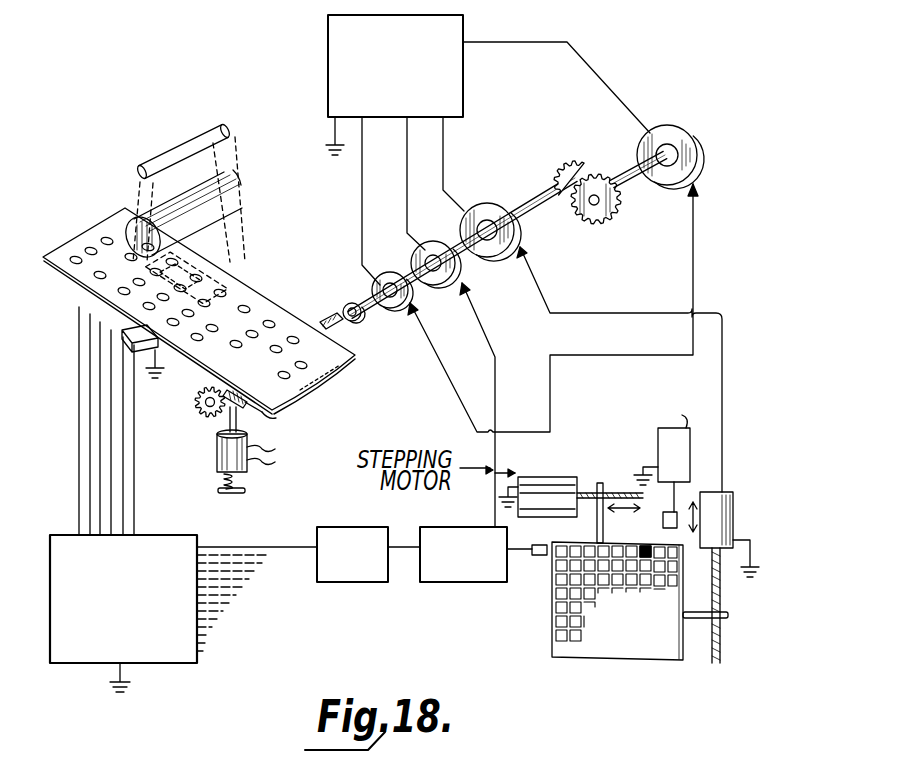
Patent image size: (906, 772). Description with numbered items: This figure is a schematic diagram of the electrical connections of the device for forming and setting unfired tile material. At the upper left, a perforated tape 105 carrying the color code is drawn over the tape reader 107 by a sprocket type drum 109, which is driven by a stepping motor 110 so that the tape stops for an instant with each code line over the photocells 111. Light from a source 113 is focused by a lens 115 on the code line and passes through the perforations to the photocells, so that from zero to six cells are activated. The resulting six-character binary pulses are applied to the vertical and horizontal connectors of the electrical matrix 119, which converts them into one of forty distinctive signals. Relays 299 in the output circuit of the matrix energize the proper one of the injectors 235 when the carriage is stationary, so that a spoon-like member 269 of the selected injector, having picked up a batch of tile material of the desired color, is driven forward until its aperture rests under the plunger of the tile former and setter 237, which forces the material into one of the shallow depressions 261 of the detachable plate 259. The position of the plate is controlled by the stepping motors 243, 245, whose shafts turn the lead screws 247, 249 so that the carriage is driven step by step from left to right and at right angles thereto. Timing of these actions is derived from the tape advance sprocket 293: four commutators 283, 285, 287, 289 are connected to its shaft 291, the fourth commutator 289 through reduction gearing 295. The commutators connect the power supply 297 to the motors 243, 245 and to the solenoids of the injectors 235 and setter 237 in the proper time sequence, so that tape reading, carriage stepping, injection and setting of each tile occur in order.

The tape 105 is at (80, 288).
The tape reader 107 is at (288, 286).
The sprocket type drum 109 is at (200, 412).
The stepping motor 110 is at (217, 462).
The photocells 111 is at (172, 356).
The light source 113 is at (172, 148).
The lens 115 is at (241, 187).
The electrical matrix 119 is at (167, 658).
The injectors 235 is at (464, 583).
The tile former and setter 237 is at (686, 437).
The stepping motor 243 is at (533, 483).
The stepping motor 245 is at (734, 524).
The lead screw 247 is at (622, 467).
The lead screw 249 is at (722, 638).
The detachable plate 259 is at (548, 632).
The shallow depressions 261 is at (655, 545).
The spoon-like members 269 is at (521, 552).
The commutator 283 is at (400, 312).
The commutator 285 is at (458, 266).
The commutator 287 is at (508, 177).
The fourth commutator 289 is at (688, 128).
The shaft 291 is at (352, 303).
The tape advance sprocket 293 is at (270, 420).
The reduction gearing 295 is at (590, 176).
The power supply 297 is at (328, 72).
The relays 299 is at (354, 527).